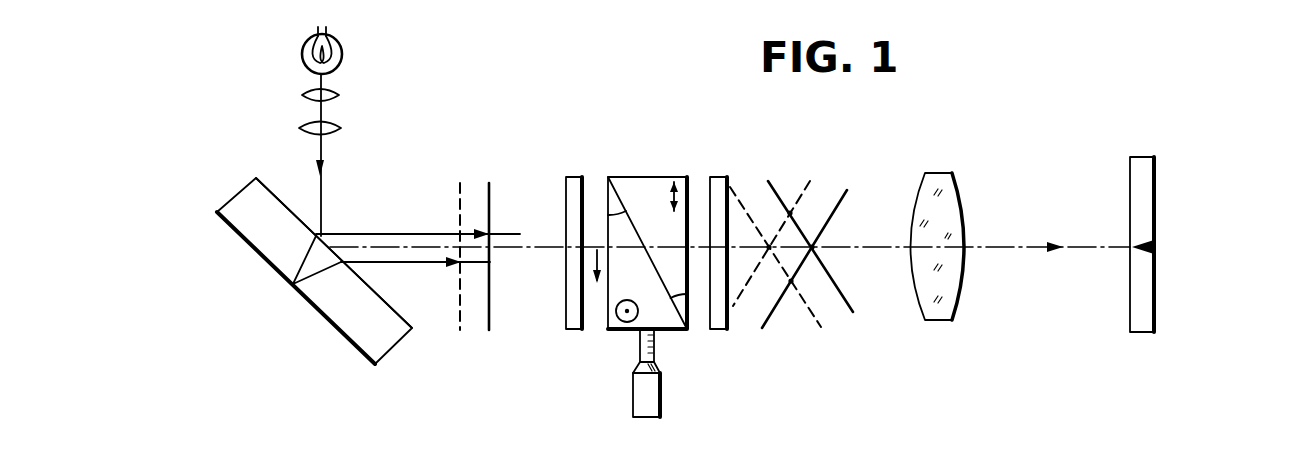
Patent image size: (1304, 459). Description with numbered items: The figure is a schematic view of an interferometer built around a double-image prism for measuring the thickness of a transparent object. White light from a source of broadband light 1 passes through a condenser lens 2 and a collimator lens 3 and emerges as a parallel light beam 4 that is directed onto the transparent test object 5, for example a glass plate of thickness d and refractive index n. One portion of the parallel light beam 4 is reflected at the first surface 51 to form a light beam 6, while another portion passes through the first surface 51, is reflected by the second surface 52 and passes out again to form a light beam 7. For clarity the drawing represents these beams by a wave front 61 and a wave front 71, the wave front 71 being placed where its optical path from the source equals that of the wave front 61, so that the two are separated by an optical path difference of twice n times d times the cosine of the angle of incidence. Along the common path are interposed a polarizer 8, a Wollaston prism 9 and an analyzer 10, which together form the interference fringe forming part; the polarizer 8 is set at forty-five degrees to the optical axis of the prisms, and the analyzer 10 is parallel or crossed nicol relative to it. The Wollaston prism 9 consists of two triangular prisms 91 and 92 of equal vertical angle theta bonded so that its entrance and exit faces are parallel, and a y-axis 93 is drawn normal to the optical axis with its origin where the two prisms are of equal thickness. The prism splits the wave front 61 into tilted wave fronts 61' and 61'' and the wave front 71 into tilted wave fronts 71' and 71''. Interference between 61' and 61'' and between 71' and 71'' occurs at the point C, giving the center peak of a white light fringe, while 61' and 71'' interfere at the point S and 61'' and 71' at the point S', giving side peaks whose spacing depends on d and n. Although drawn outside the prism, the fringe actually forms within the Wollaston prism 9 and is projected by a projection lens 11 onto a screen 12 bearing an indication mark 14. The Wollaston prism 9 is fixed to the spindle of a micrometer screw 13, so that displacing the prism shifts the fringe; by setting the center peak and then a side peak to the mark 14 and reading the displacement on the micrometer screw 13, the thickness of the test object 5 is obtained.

The source of broadband light 1 is at (343, 52).
The condenser lens 2 is at (339, 95).
The collimator lens 3 is at (341, 128).
The parallel light beam 4 is at (318, 150).
The transparent test object 5 is at (301, 271).
The first surface 51 is at (277, 198).
The second surface 52 is at (245, 246).
The light beam 6 is at (391, 234).
The light beam 7 is at (410, 262).
The wave front 61 is at (471, 232).
The wave front 71 is at (439, 272).
The polarizer 8 is at (573, 330).
The Wollaston prism 9 is at (634, 242).
The triangular prism 91 is at (622, 330).
The triangular prism 92 is at (652, 197).
The y-axis 93 is at (597, 250).
The analyzer 10 is at (710, 330).
The projection lens 11 is at (937, 172).
The screen 12 is at (1132, 178).
The micrometer screw 13 is at (633, 400).
The indication mark 14 is at (1140, 242).
The wave front 61' is at (809, 236).
The wave front 61'' is at (823, 274).
The wave front 71' is at (771, 225).
The wave front 71'' is at (784, 279).
The point S is at (786, 307).
The point S' is at (768, 200).
The point C is at (767, 262).